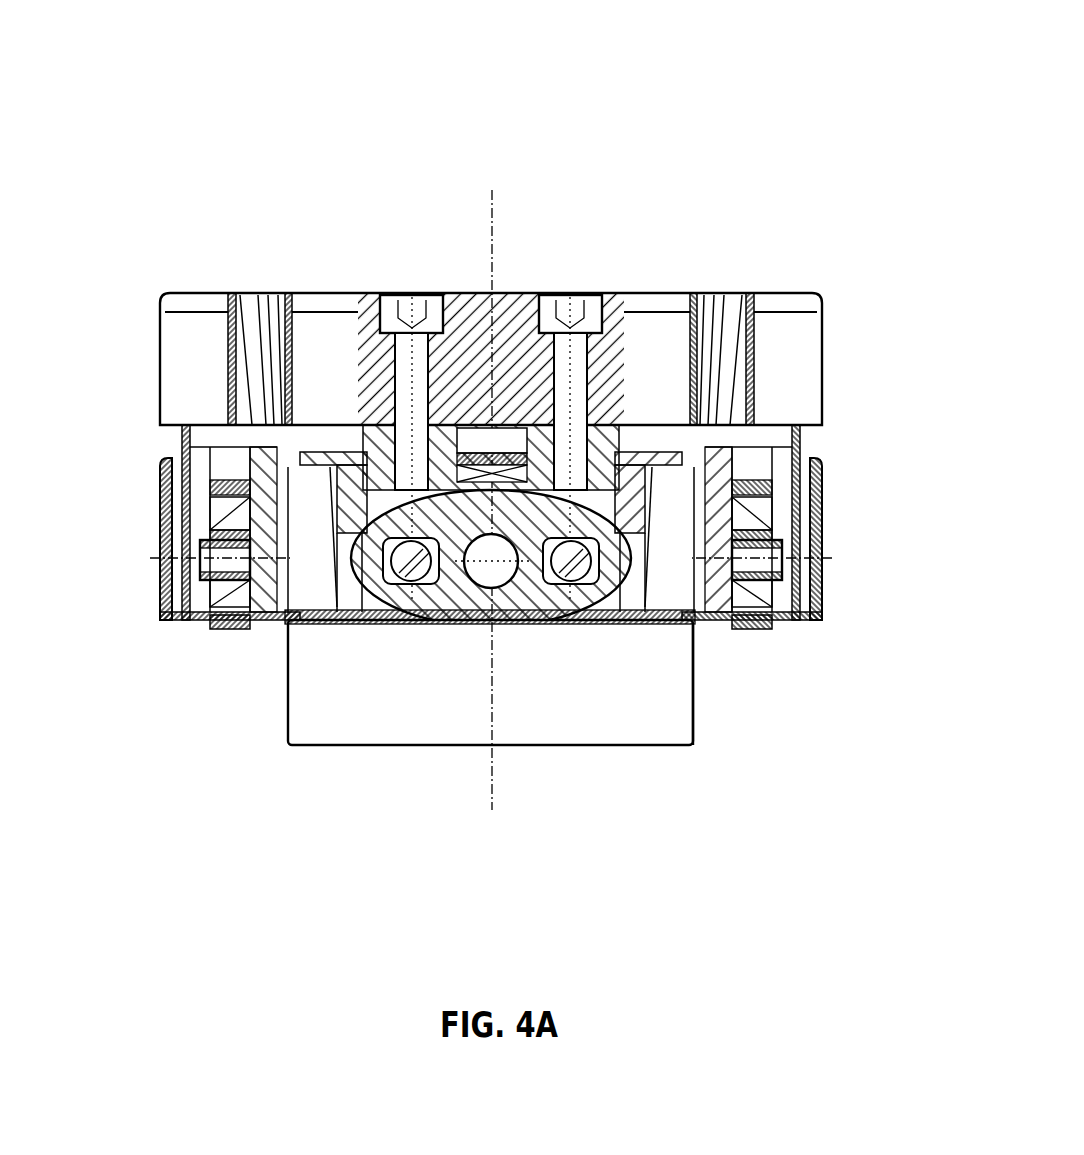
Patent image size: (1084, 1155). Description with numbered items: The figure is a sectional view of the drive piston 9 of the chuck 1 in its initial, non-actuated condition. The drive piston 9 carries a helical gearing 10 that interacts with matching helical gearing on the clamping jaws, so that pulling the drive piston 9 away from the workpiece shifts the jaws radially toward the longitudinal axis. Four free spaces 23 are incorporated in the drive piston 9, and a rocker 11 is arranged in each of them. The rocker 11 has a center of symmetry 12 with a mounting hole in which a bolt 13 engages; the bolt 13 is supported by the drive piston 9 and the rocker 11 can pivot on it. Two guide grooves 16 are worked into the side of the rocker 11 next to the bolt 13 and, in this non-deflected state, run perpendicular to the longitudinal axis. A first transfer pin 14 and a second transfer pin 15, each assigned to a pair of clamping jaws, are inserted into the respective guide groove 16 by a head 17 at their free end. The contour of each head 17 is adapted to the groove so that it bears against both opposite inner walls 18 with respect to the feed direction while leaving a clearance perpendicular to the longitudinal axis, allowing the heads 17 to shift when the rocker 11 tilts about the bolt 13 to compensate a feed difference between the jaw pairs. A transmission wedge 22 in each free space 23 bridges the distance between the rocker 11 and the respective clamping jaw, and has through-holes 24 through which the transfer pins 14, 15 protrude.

The clamping device 1 is at (499, 465).
The drive piston 9 is at (562, 712).
The helical gearing 10 is at (262, 327).
The rocker 11 is at (462, 592).
The center of symmetry 12 is at (491, 590).
The bolt 13 is at (504, 588).
The first transfer pin 14 is at (405, 312).
The second transfer pin 15 is at (612, 372).
The guide groove 16 is at (693, 733).
The head 17 is at (318, 626).
The inner walls 18 is at (408, 580).
The transmission wedge 22 is at (222, 408).
The free spaces 23 is at (360, 485).
The through-holes 24 is at (378, 430).